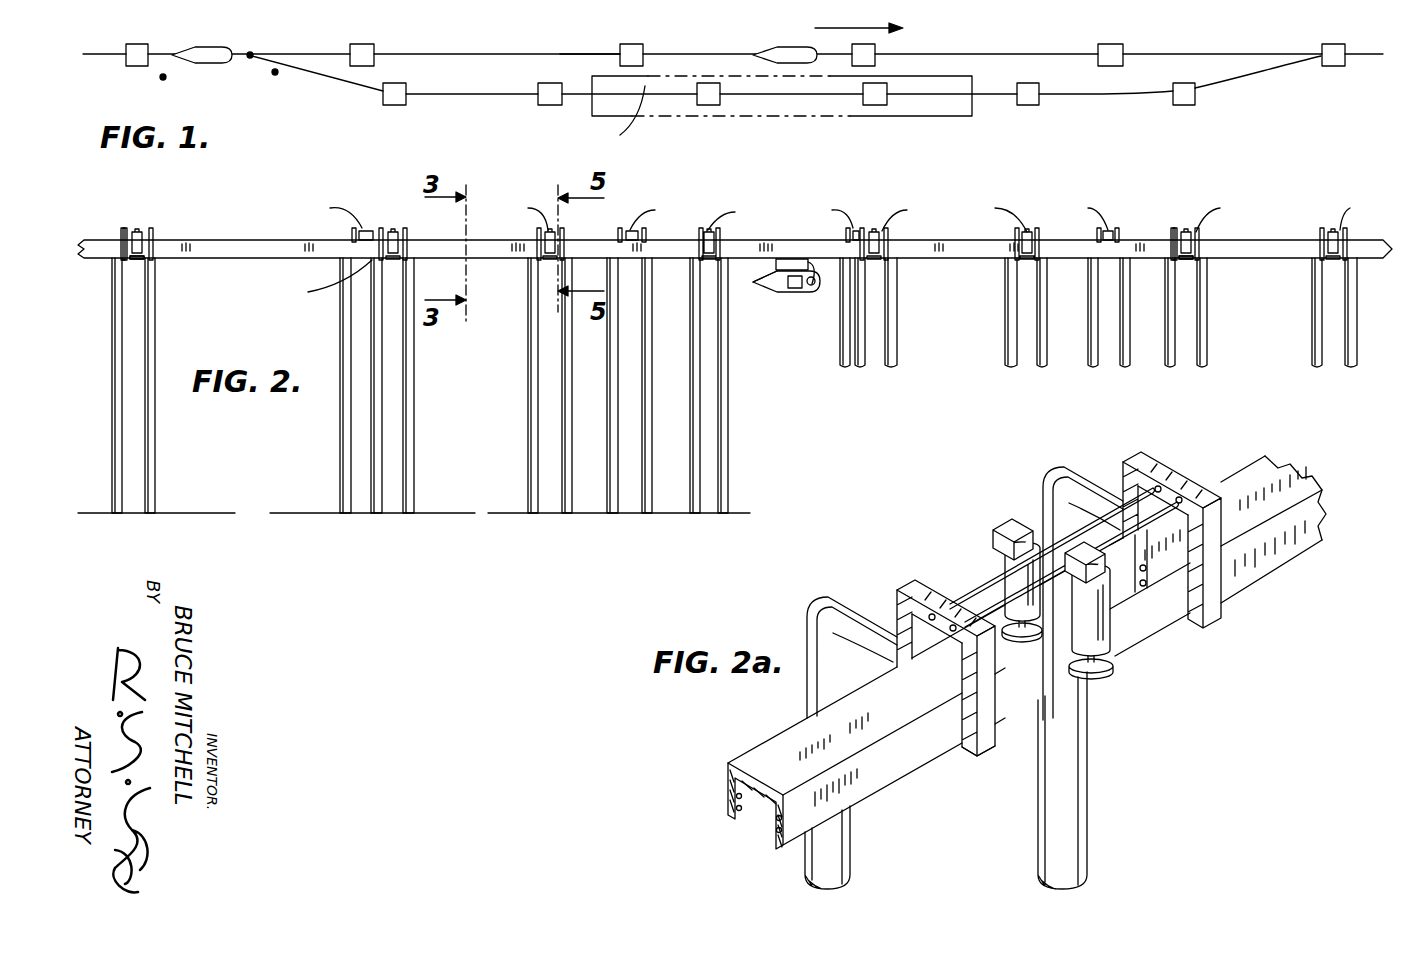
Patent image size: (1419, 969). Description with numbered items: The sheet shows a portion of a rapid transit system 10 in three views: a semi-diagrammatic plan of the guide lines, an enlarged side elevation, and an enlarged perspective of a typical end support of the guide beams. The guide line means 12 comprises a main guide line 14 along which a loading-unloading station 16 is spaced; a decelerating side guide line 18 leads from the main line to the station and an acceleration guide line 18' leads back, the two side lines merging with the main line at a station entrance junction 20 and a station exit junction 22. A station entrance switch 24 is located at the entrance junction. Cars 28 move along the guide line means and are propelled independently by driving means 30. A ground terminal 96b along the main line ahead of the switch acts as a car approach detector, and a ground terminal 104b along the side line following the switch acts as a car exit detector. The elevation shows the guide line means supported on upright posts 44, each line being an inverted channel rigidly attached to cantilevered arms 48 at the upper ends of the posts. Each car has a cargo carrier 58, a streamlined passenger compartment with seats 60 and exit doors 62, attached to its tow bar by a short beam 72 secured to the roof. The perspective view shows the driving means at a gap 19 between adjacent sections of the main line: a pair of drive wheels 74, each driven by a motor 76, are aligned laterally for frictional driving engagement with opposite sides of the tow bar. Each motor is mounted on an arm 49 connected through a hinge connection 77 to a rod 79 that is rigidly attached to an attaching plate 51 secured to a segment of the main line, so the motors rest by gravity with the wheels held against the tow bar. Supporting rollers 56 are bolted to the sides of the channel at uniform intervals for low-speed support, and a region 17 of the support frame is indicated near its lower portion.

In FIG. 1, the rapid transit system 10 is at (320, 40).
In FIG. 1, the main line or feeder line 12 is at (496, 48).
In FIG. 2, the main line or feeder line 12 is at (435, 234).
In FIG. 1, the main guide line 14 is at (598, 52).
In FIG. 2A, the main guide line 14 is at (770, 738).
In FIG. 1, the loading-unloading station 16 is at (955, 120).
In FIG. 2A, the frame lower portion 17 is at (1021, 745).
In FIG. 1, the decelerating side guide line 18 is at (723, 99).
In FIG. 1, the acceleration guide line 18' is at (1264, 87).
In FIG. 2A, the gap 19 is at (1007, 733).
In FIG. 1, the station entrance junction 20 is at (262, 48).
In FIG. 1, the station exit junction 22 is at (1303, 52).
In FIG. 1, the station entrance switch 24 is at (248, 58).
In FIG. 1, the car 28 is at (196, 44).
In FIG. 2, the car 28 is at (832, 280).
In FIG. 1, the driving means 30 is at (362, 42).
In FIG. 2, the driving means 30 is at (138, 224).
In FIG. 2, the upright post 44 is at (381, 362).
In FIG. 2A, the upright post 44 is at (852, 847).
In FIG. 2A, the cantilevered arm 48 is at (863, 605).
In FIG. 2A, the arm 49 is at (1020, 520).
In FIG. 2A, the attaching plate 51 is at (987, 714).
In FIG. 2A, the supporting roller 56 is at (740, 807).
In FIG. 2, the cargo carrier 58 is at (753, 281).
In FIG. 2, the seat 60 is at (788, 290).
In FIG. 2, the exit door 62 is at (803, 286).
In FIG. 2, the short beam 72 is at (800, 262).
In FIG. 2, the drive wheel 74 is at (137, 259).
In FIG. 2A, the drive wheel 74 is at (1010, 653).
In FIG. 2, the motor 76 is at (157, 260).
In FIG. 2A, the motor 76 is at (1005, 557).
In FIG. 2A, the hinge connection 77 is at (1005, 542).
In FIG. 2A, the rod 79 is at (960, 600).
In FIG. 1, the ground terminal 96b is at (160, 79).
In FIG. 1, the ground terminal 104b is at (275, 75).